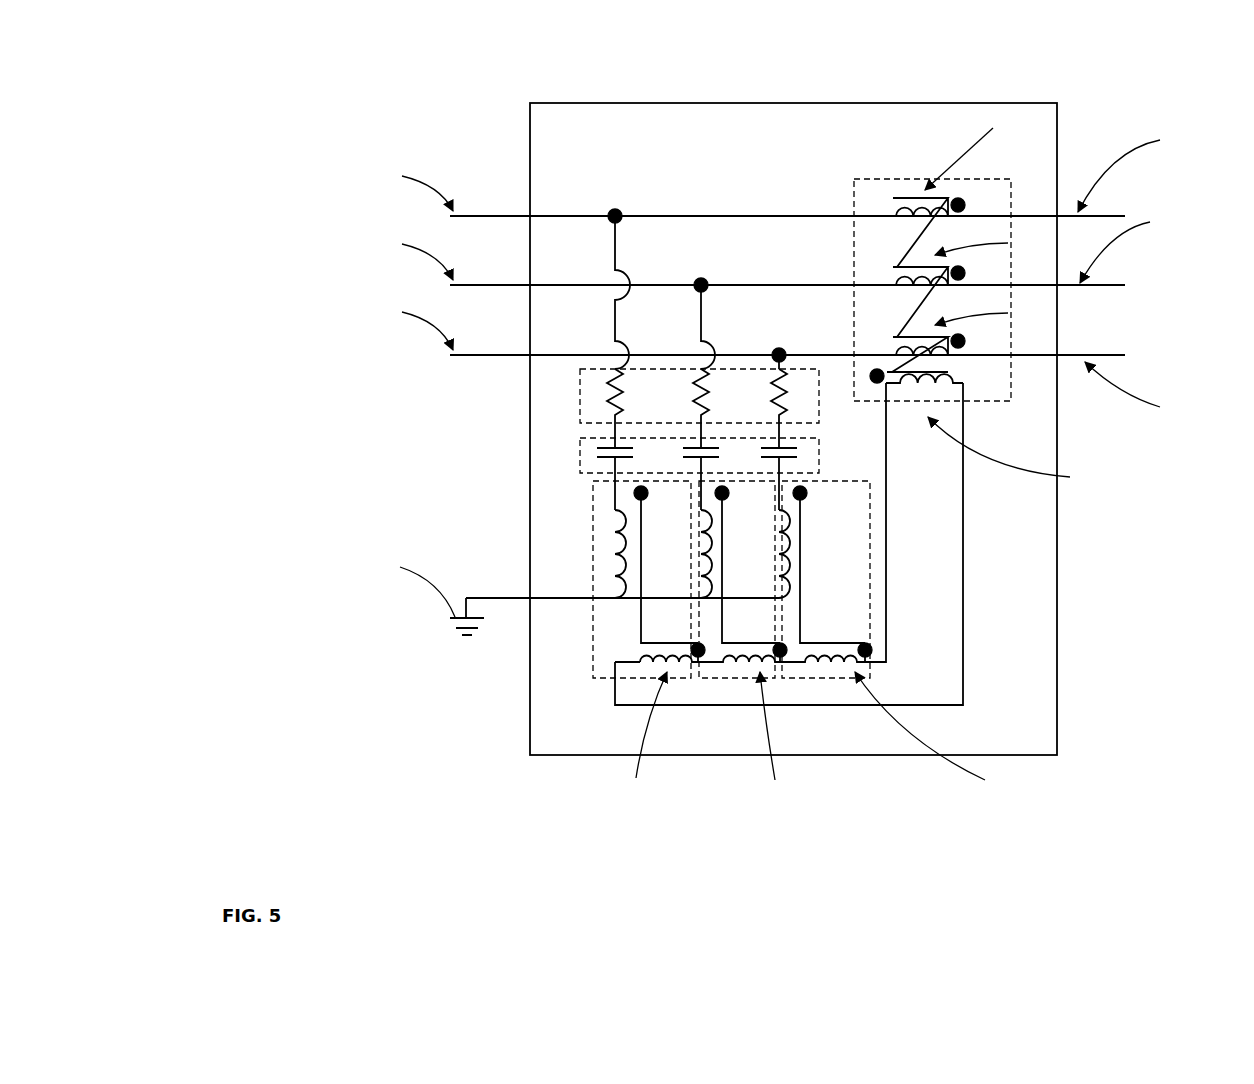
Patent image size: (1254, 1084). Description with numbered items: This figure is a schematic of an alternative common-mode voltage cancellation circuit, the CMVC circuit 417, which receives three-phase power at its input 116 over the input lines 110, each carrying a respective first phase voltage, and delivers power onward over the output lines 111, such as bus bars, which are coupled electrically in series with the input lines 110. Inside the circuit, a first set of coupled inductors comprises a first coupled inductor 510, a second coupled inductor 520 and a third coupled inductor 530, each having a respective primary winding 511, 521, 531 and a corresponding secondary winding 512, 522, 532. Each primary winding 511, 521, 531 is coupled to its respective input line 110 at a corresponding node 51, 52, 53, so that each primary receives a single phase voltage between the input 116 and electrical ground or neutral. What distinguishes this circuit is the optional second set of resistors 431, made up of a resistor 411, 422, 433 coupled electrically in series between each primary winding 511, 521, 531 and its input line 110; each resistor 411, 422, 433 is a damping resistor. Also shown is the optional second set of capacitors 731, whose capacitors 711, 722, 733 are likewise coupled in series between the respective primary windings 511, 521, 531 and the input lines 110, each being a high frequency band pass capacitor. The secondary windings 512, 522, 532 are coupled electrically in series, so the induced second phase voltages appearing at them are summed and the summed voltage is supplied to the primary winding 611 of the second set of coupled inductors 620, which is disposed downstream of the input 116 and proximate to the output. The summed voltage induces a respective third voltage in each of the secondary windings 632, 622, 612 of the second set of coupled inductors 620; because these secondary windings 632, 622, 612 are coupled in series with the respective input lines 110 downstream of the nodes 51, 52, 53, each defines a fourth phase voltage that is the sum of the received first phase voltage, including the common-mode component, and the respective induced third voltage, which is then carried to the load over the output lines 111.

The CMVC circuit 417 is at (738, 70).
The input 116 is at (520, 146).
The input lines 110 is at (512, 214).
The output lines 111 is at (1105, 215).
The node 51 is at (616, 208).
The node 52 is at (703, 278).
The node 53 is at (777, 350).
The second set of resistors 431 is at (577, 405).
The resistor 411 is at (605, 400).
The resistor 422 is at (692, 406).
The resistor 433 is at (770, 406).
The second set of capacitors 731 is at (822, 438).
The capacitor 711 is at (597, 452).
The capacitor 722 is at (668, 457).
The capacitor 733 is at (808, 452).
The first coupled inductor 510 is at (593, 525).
The second coupled inductor 520 is at (785, 678).
The third coupled inductor 530 is at (873, 590).
The primary winding 511 is at (615, 565).
The primary winding 521 is at (723, 563).
The primary winding 531 is at (790, 565).
The secondary winding 512 is at (648, 672).
The secondary winding 522 is at (735, 672).
The secondary winding 532 is at (830, 672).
The second set of coupled inductors 620 is at (903, 179).
The secondary winding 632 is at (885, 195).
The secondary winding 622 is at (885, 270).
The secondary winding 612 is at (892, 338).
The primary winding 611 is at (940, 395).